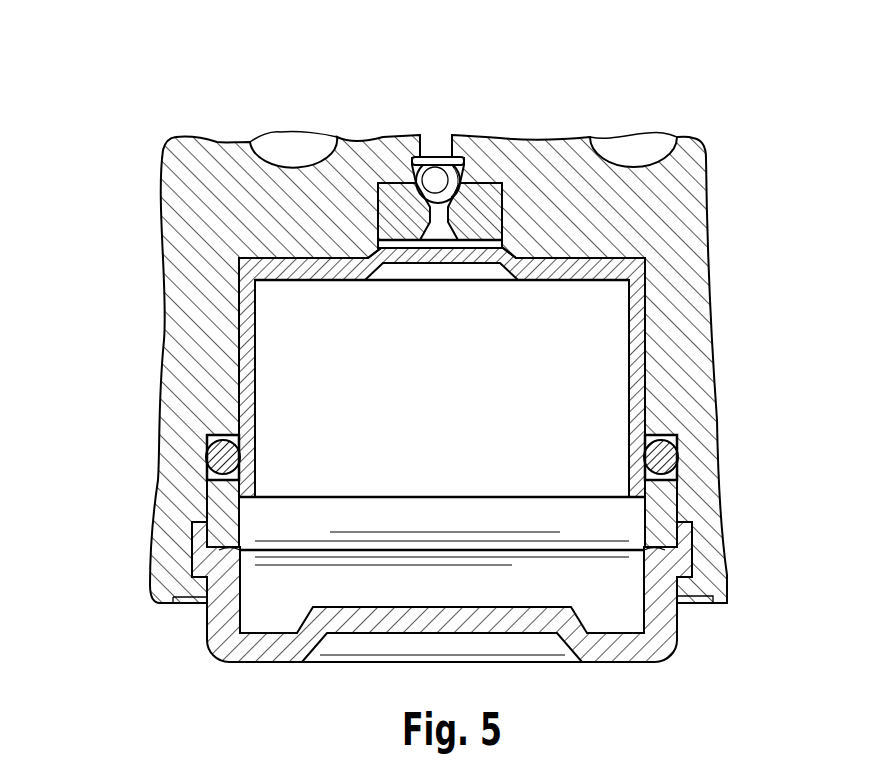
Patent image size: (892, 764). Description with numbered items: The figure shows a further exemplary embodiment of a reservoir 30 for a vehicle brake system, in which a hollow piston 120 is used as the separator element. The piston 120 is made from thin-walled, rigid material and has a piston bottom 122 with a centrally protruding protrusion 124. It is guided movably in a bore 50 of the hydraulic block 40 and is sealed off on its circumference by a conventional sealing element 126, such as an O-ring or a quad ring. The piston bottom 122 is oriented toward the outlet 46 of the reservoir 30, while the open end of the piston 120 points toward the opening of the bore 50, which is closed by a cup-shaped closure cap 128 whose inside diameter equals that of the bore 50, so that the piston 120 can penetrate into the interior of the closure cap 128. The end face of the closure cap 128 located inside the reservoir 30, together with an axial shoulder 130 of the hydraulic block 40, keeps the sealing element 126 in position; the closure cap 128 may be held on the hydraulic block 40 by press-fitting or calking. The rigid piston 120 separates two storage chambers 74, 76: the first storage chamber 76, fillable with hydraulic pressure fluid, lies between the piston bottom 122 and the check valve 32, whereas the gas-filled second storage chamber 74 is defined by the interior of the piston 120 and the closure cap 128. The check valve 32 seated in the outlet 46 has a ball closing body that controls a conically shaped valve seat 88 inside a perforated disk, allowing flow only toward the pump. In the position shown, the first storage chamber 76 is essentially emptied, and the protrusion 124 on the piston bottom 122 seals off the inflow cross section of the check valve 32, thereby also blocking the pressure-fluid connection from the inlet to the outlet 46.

The reservoir 30 is at (147, 113).
The check valve 32 is at (399, 168).
The hydraulic block 40 is at (187, 216).
The outlet 46 is at (430, 150).
The bore 50 is at (262, 326).
The second storage chamber 74 is at (560, 323).
The first storage chamber 76 is at (473, 233).
The valve seat 88 is at (452, 180).
The hollow piston 120 is at (247, 388).
The piston bottom 122 is at (297, 277).
The protrusion 124 is at (507, 210).
The sealing element 126 is at (220, 452).
The closure cap 128 is at (225, 627).
The axial shoulder 130 is at (653, 460).